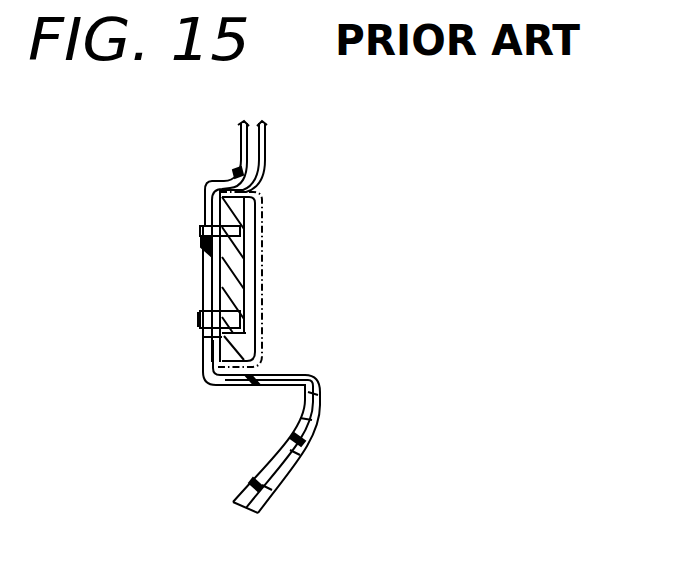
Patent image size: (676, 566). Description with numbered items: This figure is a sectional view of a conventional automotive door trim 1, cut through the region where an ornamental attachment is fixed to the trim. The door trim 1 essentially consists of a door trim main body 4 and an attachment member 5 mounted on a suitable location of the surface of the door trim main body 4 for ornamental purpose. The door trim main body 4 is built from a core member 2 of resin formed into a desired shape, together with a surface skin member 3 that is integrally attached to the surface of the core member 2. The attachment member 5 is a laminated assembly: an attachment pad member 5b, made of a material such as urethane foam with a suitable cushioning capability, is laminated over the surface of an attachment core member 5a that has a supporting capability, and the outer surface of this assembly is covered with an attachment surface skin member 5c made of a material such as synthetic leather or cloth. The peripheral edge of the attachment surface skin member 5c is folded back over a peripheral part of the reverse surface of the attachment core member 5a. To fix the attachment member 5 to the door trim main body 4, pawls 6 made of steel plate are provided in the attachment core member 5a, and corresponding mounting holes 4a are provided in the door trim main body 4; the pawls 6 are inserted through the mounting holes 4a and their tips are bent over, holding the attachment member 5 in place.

The door trim 1 is at (282, 150).
The core member 2 is at (278, 447).
The surface skin member 3 is at (253, 478).
The door trim main body 4 is at (182, 410).
The mounting holes 4a is at (202, 223).
The attachment member 5 is at (274, 256).
The attachment core member 5a is at (238, 287).
The attachment pad member 5b is at (248, 345).
The attachment surface skin member 5c is at (263, 223).
The pawls 6 is at (200, 237).